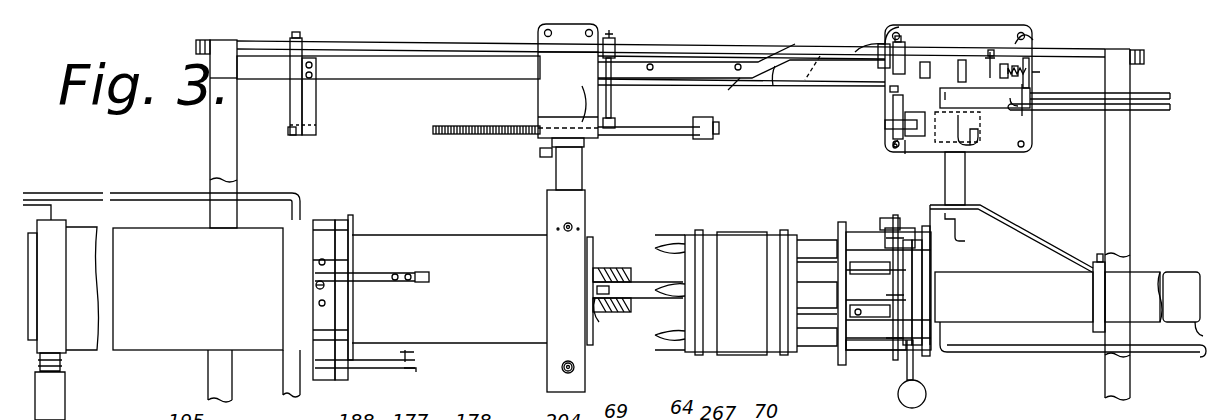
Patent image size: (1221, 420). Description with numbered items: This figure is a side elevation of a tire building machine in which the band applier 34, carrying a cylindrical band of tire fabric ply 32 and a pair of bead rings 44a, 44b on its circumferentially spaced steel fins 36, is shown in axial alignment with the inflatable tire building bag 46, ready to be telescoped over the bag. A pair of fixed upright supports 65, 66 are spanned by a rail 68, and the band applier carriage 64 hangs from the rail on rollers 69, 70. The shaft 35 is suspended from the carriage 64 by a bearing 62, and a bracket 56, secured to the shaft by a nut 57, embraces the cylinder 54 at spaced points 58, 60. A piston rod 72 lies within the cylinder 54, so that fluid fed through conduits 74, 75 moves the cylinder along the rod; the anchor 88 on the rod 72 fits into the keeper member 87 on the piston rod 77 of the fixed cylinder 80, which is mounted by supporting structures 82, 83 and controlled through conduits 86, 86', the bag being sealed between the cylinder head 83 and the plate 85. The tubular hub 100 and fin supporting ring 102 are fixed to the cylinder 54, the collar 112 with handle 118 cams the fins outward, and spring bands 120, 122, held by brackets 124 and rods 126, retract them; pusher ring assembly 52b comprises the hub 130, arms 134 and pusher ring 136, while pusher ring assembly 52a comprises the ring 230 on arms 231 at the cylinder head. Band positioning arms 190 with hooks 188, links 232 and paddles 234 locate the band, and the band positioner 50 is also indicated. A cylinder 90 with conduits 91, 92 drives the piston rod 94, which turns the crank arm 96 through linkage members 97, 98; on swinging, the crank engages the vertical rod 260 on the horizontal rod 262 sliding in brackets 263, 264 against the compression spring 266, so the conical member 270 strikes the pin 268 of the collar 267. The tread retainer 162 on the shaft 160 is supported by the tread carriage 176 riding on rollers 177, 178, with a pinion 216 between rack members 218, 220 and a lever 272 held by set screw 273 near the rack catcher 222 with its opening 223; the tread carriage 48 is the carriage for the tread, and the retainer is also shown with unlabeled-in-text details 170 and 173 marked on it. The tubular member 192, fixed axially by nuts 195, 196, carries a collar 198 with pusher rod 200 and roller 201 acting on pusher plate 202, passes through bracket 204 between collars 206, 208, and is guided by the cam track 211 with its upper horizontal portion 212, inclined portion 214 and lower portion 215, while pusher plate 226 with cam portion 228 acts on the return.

The tire fabric ply 32 is at (742, 242).
The band applier 34 is at (848, 184).
The shaft 35 is at (965, 190).
The steel fins 36 is at (666, 248).
The bead ring 44a is at (712, 217).
The bead ring 44b is at (812, 217).
The inflatable tire building bag 46 is at (500, 257).
The tread carriage 48 is at (516, 160).
The band positioner 50 is at (370, 384).
The pusher ring assembly 52a is at (353, 206).
The pusher ring assembly 52b is at (876, 224).
The cylinder 54 is at (1022, 265).
The bracket 56 is at (1000, 222).
The nut 57 is at (970, 228).
The support point 58 is at (930, 304).
The support point 60 is at (1093, 296).
The bearing 62 is at (975, 118).
The carriage 64 is at (1042, 132).
The fixed upright support 65 is at (210, 120).
The fixed upright support 66 is at (1130, 194).
The rail 68 is at (370, 42).
The roller 69 is at (886, 24).
The roller 70 is at (1090, 56).
The piston rod 72 is at (652, 292).
The fluid conduit 74 is at (1025, 350).
The fluid conduit 75 is at (1200, 340).
The piston rod 77 is at (600, 270).
The cylinder 80 is at (192, 289).
The supporting structure 82 is at (52, 312).
The supporting structure 83 is at (283, 310).
The plate 85 is at (593, 236).
The fluid conduit 86 is at (161, 192).
The fluid conduit 86' is at (282, 184).
The keeper member 87 is at (612, 272).
The anchor 88 is at (600, 320).
The cylinder 90 is at (990, 109).
The fluid conduit 91 is at (1156, 92).
The fluid conduit 92 is at (1146, 106).
The piston rod 94 is at (918, 96).
The crank arm 96 is at (910, 146).
The linkage member 97 is at (885, 120).
The linkage member 98 is at (894, 143).
The tubular hub 100 is at (838, 294).
The fin supporting ring 102 is at (888, 270).
The collar 112 is at (890, 318).
The handle 118 is at (926, 394).
The endless coil spring band 120 is at (890, 218).
The endless coil spring band 122 is at (932, 270).
The bracket 124 is at (900, 228).
The spring supporting rod 126 is at (930, 284).
The hub 130 is at (622, 288).
The arm 134 is at (844, 226).
The pusher ring 136 is at (846, 352).
The shaft 160 is at (580, 166).
The tread retainer 162 is at (547, 296).
The pivot 170 is at (574, 360).
The pivot 173 is at (565, 227).
The tread carriage 176 is at (538, 92).
The roller 177 is at (541, 26).
The roller 178 is at (590, 22).
The hook 188 is at (428, 272).
The band positioning arm 190 is at (414, 56).
The tubular member 192 is at (722, 52).
The nut 195 is at (204, 40).
The nut 196 is at (1142, 50).
The collar 198 is at (616, 40).
The pusher rod 200 is at (612, 100).
The roller 201 is at (614, 126).
The pusher plate 202 is at (574, 94).
The bracket 204 is at (875, 62).
The collar 206 is at (856, 42).
The collar 208 is at (900, 50).
The cam track 211 is at (748, 88).
The upper horizontal portion 212 is at (810, 82).
The inclined portion 214 is at (770, 90).
The lower horizontal track portion 215 is at (677, 80).
The pinion 216 is at (566, 126).
The rack member 218 is at (662, 136).
The rack member 220 is at (470, 125).
The rack catcher 222 is at (316, 98).
The opening 223 is at (316, 126).
The pusher plate 226 is at (714, 134).
The cam portion 228 is at (694, 138).
The ring 230 is at (350, 242).
The arm 231 is at (336, 216).
The link 232 is at (350, 370).
The paddle 234 is at (330, 262).
The vertical rod 260 is at (975, 143).
The horizontal rod 262 is at (962, 60).
The bracket 263 is at (928, 64).
The bracket 264 is at (1032, 66).
The compression spring 266 is at (1042, 71).
The collar 267 is at (1006, 64).
The pin 268 is at (1030, 38).
The conical member 270 is at (986, 58).
The lever 272 is at (290, 101).
The set screw 273 is at (296, 38).